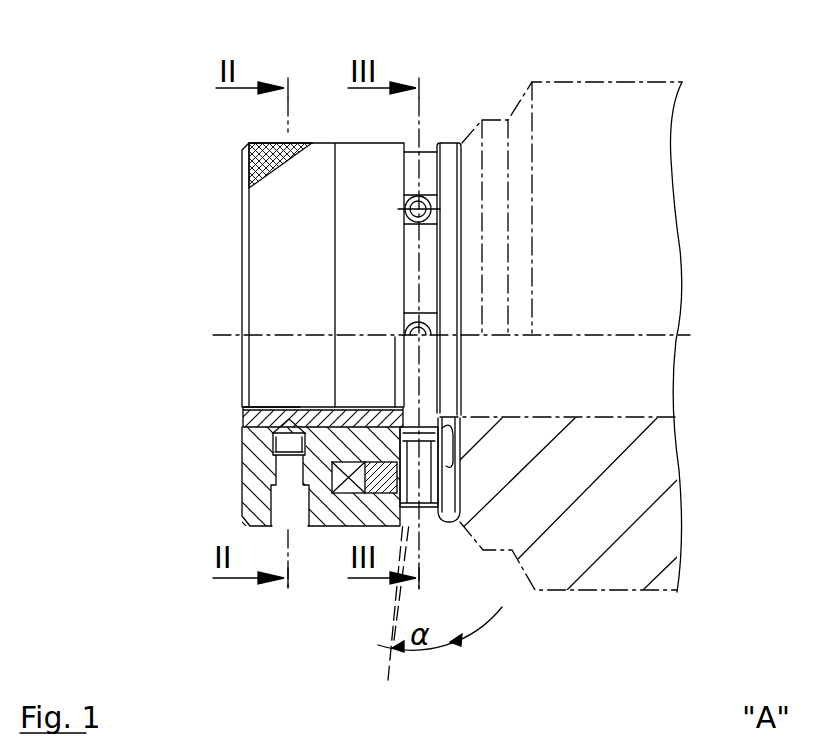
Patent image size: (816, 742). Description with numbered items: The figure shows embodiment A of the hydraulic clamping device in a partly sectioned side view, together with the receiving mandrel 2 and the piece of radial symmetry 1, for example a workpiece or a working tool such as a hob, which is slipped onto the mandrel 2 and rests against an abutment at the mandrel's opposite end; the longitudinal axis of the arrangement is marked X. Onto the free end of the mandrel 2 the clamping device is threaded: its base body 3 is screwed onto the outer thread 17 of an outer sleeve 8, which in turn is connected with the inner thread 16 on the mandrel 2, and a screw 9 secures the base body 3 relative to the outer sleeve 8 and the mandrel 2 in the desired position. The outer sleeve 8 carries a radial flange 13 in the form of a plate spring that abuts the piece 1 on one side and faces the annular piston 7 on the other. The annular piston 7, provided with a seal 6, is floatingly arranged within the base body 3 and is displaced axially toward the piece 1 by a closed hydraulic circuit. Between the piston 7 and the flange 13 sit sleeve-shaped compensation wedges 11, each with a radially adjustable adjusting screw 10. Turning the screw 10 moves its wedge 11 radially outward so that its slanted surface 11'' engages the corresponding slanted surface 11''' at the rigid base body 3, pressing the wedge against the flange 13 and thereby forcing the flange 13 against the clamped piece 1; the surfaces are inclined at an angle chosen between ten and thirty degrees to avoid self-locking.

The piece of radial symmetry 1 is at (595, 184).
The receiving mandrel 2 is at (593, 378).
The base body 3 is at (276, 261).
The seal 6 is at (363, 477).
The annular piston 7 is at (422, 170).
The outer sleeve 8 is at (333, 417).
The screw 9 is at (296, 446).
The adjusting screw 10 is at (437, 527).
The compensation wedge 11 is at (598, 510).
The slanted surface 11'' is at (465, 628).
The slanted surface 11''' is at (405, 629).
The radial flange 13 is at (452, 481).
The inner thread 16 is at (261, 408).
The outer thread 17 is at (255, 423).
The axis of rotation X is at (468, 335).